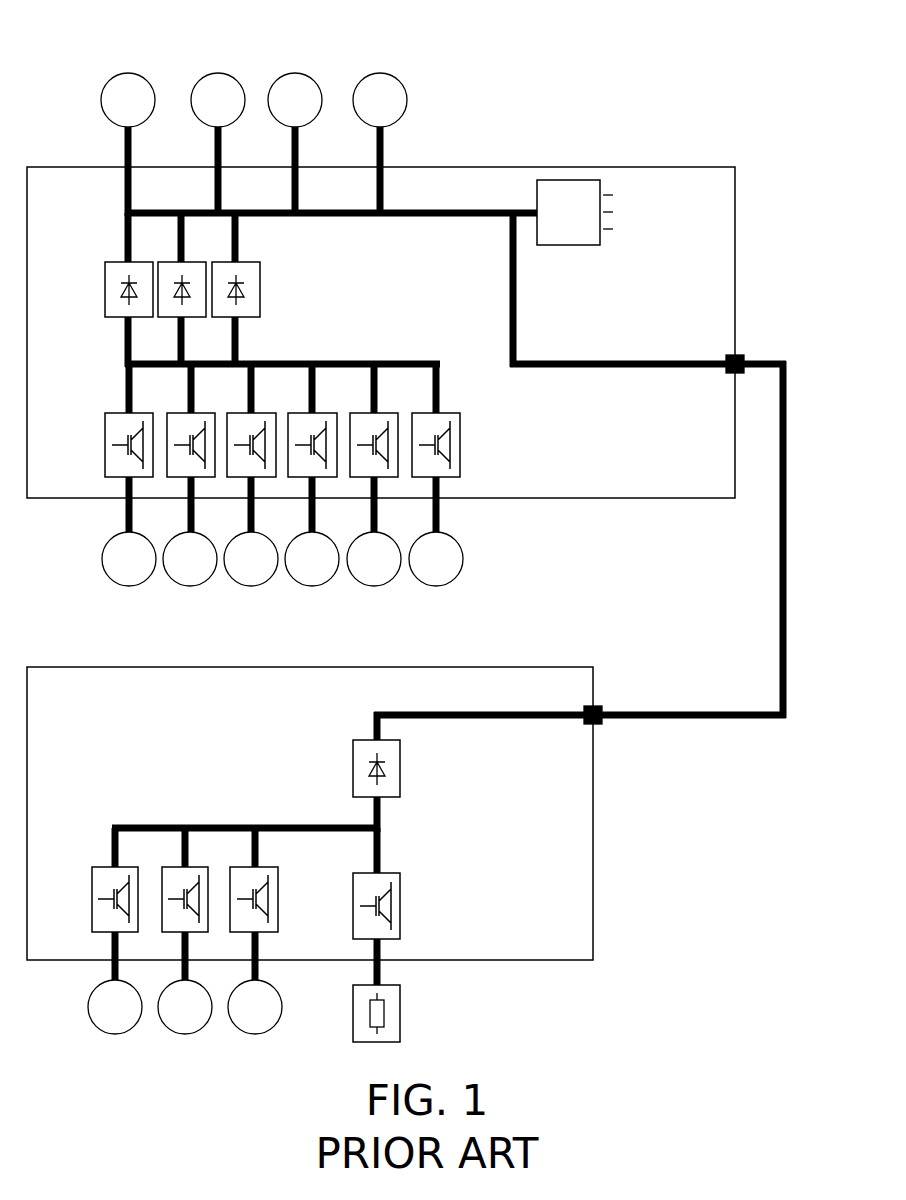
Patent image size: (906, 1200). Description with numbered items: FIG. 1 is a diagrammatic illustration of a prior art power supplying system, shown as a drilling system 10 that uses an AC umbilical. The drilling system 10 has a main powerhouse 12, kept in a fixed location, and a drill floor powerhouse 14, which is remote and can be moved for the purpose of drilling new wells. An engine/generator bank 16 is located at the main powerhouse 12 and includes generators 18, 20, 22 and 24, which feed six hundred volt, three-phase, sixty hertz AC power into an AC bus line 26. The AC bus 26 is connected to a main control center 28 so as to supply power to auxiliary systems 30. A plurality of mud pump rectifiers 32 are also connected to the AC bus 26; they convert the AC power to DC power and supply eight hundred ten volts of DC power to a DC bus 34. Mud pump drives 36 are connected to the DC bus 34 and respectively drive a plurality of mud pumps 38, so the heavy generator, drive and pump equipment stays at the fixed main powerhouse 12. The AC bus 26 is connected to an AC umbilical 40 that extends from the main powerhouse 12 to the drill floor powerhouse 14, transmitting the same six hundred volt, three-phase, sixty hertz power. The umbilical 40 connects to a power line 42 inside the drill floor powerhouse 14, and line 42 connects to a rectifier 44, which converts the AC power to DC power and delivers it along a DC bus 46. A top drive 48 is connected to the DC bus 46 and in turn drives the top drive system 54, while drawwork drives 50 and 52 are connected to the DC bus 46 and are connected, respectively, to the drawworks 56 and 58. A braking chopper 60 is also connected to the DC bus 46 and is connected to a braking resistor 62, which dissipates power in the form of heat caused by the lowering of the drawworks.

The drilling system 10 is at (566, 136).
The main powerhouse 12 is at (632, 166).
The drill floor powerhouse 14 is at (532, 666).
The engine/generator bank 16 is at (261, 55).
The generator 18 is at (128, 73).
The generator 20 is at (218, 73).
The generator 22 is at (295, 73).
The generator 24 is at (380, 73).
The AC bus line 26 is at (424, 218).
The main control center 28 is at (570, 247).
The auxiliary systems 30 is at (679, 248).
The mud pump rectifiers 32 is at (270, 290).
The DC bus 34 is at (396, 362).
The mud pump drives 36 is at (475, 442).
The mud pumps 38 is at (489, 551).
The AC umbilical 40 is at (781, 548).
The power line 42 is at (500, 720).
The rectifier 44 is at (402, 770).
The DC bus 46 is at (243, 826).
The top drive 48 is at (86, 900).
The drawwork drive 50 is at (190, 866).
The drawwork drive 52 is at (280, 874).
The top drive system 54 is at (115, 1035).
The drawworks 56 is at (185, 1035).
The drawworks 58 is at (255, 1035).
The braking chopper 60 is at (402, 901).
The braking resistor 62 is at (402, 1010).